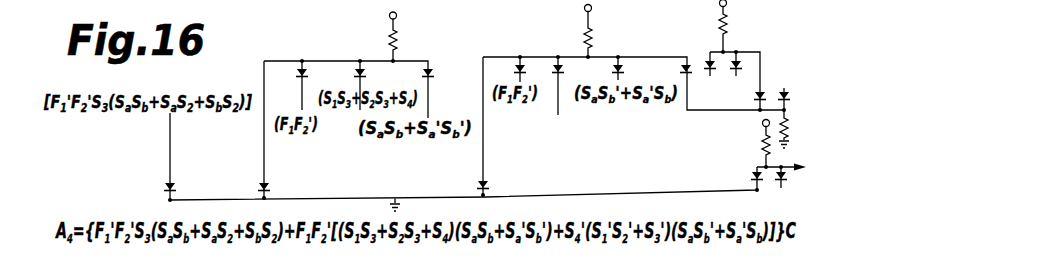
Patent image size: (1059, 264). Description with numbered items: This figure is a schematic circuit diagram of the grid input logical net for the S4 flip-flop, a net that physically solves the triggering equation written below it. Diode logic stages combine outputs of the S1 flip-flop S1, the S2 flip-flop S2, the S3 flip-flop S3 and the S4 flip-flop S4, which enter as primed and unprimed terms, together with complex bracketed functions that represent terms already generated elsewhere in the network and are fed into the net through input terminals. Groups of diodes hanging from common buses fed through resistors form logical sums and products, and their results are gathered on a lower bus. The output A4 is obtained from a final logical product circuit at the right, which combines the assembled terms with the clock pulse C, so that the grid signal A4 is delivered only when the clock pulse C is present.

The S1 flip-flop S1 is at (713, 79).
The S2 flip-flop S2 is at (740, 79).
The S3 flip-flop S3 is at (795, 86).
The S4 flip-flop S4 is at (560, 97).
The grid input signal A4 is at (790, 176).
The clock pulse C is at (787, 183).